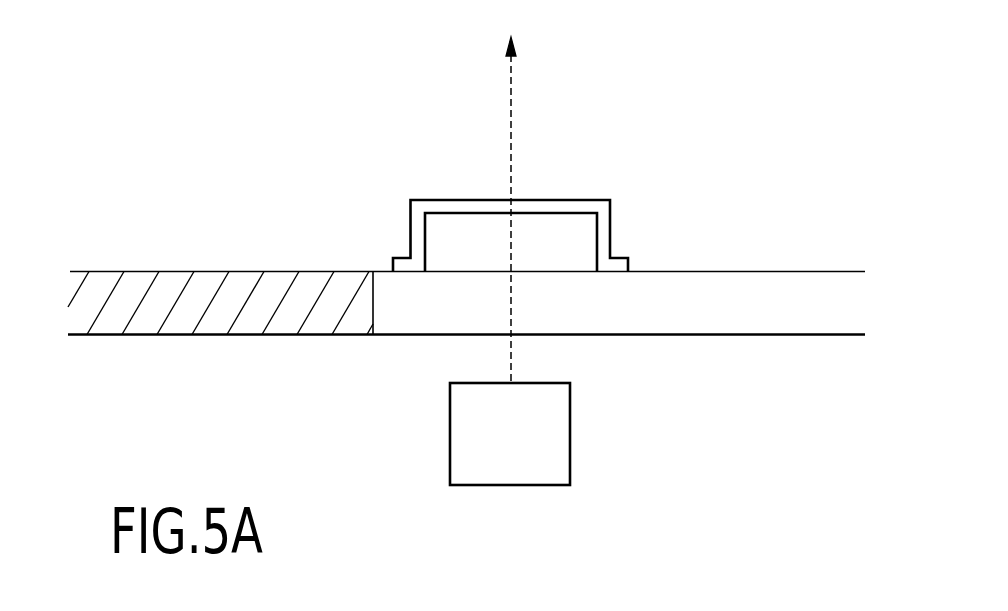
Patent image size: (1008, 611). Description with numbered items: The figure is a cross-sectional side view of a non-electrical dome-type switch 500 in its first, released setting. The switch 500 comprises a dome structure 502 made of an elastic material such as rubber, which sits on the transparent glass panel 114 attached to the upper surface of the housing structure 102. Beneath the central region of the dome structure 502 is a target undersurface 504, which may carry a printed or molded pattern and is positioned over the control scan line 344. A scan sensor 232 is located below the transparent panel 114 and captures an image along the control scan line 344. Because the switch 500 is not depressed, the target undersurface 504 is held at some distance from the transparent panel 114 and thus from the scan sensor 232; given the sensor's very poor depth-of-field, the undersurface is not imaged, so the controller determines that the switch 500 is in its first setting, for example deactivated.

The housing structure 102 is at (112, 271).
The transparent panel 114 is at (783, 271).
The non-electrical dome-type switch 500 is at (549, 225).
The dome structure 502 is at (611, 228).
The target undersurface 504 is at (558, 215).
The control scan line 344 is at (512, 191).
The scan sensor 232 is at (570, 440).